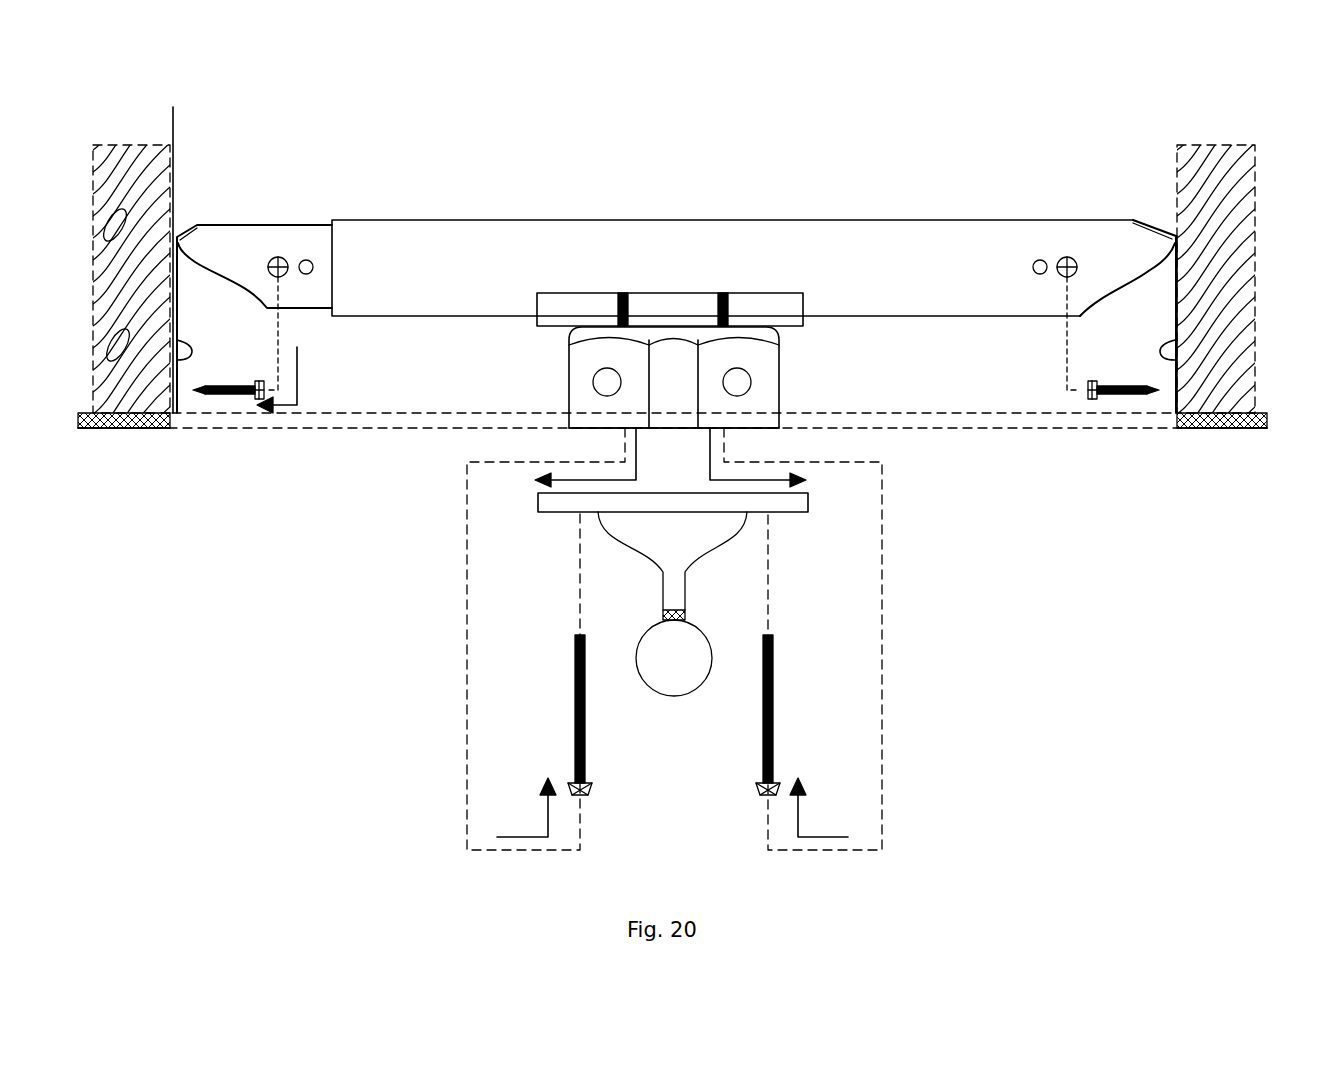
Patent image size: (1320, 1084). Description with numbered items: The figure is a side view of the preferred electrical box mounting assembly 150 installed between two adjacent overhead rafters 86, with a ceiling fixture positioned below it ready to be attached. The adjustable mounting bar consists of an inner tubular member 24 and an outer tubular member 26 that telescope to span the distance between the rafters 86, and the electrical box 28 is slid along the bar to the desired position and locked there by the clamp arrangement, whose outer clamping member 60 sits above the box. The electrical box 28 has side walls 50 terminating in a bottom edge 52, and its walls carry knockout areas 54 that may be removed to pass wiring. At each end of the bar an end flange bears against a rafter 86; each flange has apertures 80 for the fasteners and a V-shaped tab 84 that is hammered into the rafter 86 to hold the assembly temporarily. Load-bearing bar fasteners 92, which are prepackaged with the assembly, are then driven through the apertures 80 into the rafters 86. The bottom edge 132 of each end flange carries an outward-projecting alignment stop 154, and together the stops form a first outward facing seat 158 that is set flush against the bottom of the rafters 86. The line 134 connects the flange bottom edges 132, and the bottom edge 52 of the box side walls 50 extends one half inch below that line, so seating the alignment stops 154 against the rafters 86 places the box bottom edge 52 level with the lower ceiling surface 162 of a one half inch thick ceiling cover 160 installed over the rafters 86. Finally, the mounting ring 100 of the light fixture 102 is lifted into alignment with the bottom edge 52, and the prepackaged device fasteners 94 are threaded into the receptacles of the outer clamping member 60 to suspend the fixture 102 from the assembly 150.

The inner tubular member 24 is at (254, 319).
The outer tubular member 26 is at (716, 268).
The electrical box 28 is at (779, 382).
The side walls 50 is at (674, 377).
The bottom edge 52 is at (768, 431).
The knockout areas 54 is at (607, 382).
The outer clamping member 60 is at (670, 309).
The apertures 80 is at (1170, 400).
The V-shaped tab 84 is at (190, 349).
The rafters 86 is at (147, 168).
The bar fasteners 92 is at (279, 257).
The device fasteners 94 is at (624, 293).
The mounting ring 100 is at (797, 505).
The light fixture 102 is at (687, 598).
The bottom edge 132 is at (173, 415).
The line 134 is at (326, 425).
The electrical box mounting assembly 150 is at (699, 168).
The alignment stops 154 is at (160, 430).
The first outward facing seat 158 is at (1195, 402).
The ceiling cover 160 is at (117, 430).
The ceiling surface 162 is at (325, 432).